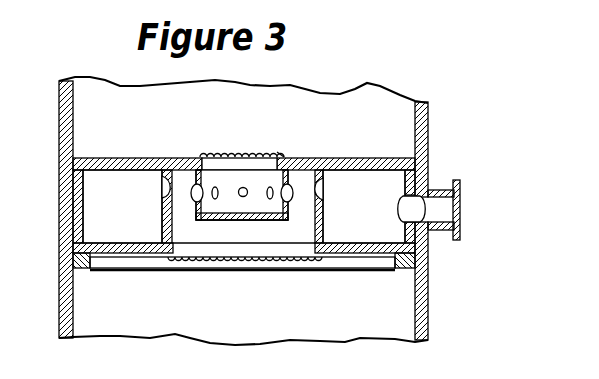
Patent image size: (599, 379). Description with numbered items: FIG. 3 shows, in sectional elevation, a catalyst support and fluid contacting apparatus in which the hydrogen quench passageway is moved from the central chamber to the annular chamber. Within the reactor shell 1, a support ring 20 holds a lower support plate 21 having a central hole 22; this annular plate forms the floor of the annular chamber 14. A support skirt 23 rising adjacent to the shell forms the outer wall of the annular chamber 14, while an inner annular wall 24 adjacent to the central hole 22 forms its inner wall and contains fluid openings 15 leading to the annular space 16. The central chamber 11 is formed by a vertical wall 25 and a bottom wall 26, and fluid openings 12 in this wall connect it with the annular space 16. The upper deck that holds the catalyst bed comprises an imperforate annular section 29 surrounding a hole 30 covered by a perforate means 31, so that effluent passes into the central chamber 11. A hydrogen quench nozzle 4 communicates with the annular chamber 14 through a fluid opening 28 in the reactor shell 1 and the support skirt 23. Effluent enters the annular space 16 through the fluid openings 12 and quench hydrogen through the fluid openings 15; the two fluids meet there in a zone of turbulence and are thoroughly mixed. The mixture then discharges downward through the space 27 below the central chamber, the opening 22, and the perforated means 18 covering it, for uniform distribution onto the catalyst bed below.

The reactor shell 1 is at (58, 282).
The hydrogen quench nozzle 4 is at (443, 198).
The central chamber 11 is at (238, 209).
The fluid openings 12 is at (222, 156).
The annular chamber 14 is at (116, 199).
The fluid openings 15 is at (162, 190).
The annular space 16 is at (322, 139).
The perforated means 18 is at (245, 283).
The support ring 20 is at (77, 268).
The lower support plate 21 is at (373, 281).
The central hole 22 is at (242, 281).
The support skirt 23 is at (84, 222).
The inner annular wall 24 is at (324, 226).
The vertical wall 25 is at (191, 168).
The bottom wall 26 is at (251, 264).
The space 27 is at (255, 242).
The fluid opening 28 is at (403, 209).
The imperforate annular section 29 is at (128, 158).
The hole 30 is at (274, 120).
The perforate means 31 is at (278, 152).